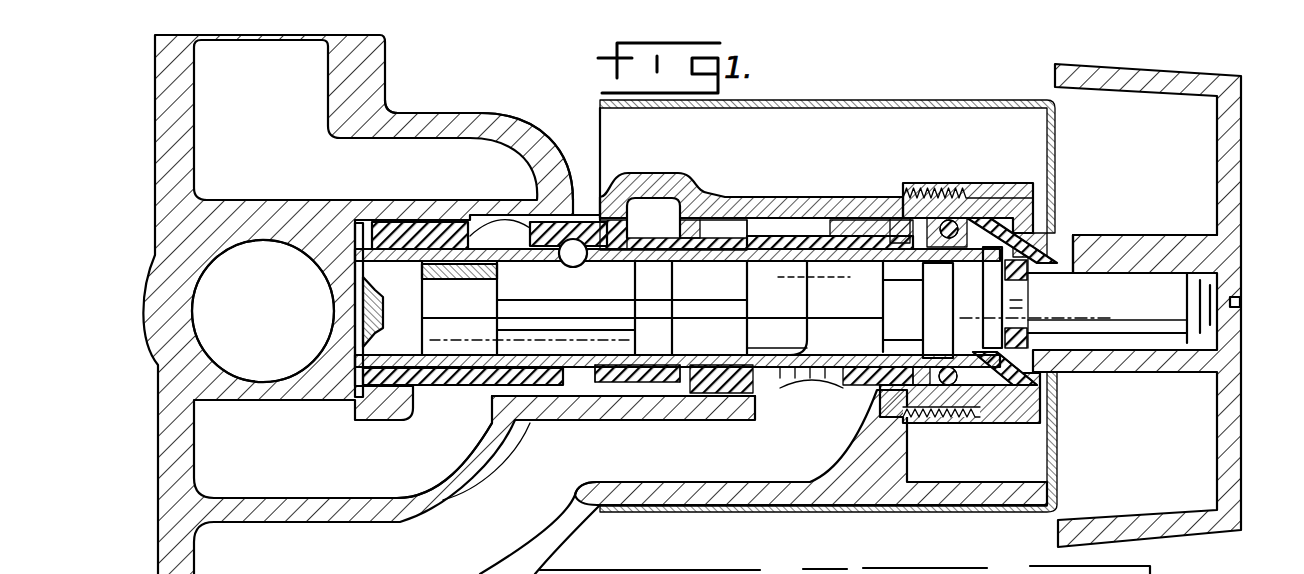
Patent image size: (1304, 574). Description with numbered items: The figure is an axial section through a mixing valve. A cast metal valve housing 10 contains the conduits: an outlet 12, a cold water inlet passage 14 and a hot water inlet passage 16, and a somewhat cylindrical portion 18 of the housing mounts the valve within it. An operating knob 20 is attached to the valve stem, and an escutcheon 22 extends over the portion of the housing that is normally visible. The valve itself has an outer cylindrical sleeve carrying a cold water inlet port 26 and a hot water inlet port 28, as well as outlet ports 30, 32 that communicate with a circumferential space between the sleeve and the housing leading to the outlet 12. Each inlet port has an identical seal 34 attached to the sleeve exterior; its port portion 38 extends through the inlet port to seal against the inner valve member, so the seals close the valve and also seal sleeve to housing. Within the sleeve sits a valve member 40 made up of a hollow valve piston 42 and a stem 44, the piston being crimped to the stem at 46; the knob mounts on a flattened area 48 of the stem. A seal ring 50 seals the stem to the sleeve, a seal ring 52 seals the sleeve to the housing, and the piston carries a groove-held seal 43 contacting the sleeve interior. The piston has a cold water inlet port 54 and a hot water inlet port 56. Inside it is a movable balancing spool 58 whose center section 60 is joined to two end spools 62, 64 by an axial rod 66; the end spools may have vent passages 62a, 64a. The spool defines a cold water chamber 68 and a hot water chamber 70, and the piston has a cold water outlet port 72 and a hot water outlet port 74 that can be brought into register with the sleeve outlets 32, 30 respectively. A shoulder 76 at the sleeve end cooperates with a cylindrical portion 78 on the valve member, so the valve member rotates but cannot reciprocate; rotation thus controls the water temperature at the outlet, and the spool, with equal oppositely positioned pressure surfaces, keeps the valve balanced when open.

The valve housing 10 is at (447, 104).
The outlet 12 is at (263, 311).
The cold water inlet passage 14 is at (395, 163).
The hot water inlet passage 16 is at (728, 482).
The cylindrical portion 18 is at (775, 196).
The operating knob 20 is at (1243, 433).
The escutcheon 22 is at (953, 100).
The cold water inlet port 26 is at (530, 228).
The hot water inlet port 28 is at (817, 378).
The outlet port 30 is at (730, 212).
The outlet port 32 is at (600, 378).
The seal 34 is at (413, 220).
The port portion 38 is at (470, 236).
The valve member 40 is at (853, 238).
The valve piston 42 is at (870, 240).
The seal 43 is at (653, 218).
The stem 44 is at (1097, 333).
The crimp attachment 46 is at (950, 260).
The flattened area 48 is at (1142, 272).
The seal ring 50 is at (1027, 268).
The seal ring 52 is at (933, 424).
The cold water inlet port 54 is at (487, 380).
The hot water inlet port 56 is at (793, 242).
The balancing spool 58 is at (637, 354).
The center section 60 is at (662, 281).
The end spool 62 is at (423, 303).
The vent passage 62a is at (497, 278).
The end spool 64 is at (873, 333).
The vent passage 64a is at (791, 308).
The axial rod 66 is at (590, 313).
The cold water chamber 68 is at (550, 348).
The hot water chamber 70 is at (693, 344).
The cold water outlet port 72 is at (588, 265).
The hot water outlet port 74 is at (747, 350).
The shoulder 76 is at (977, 424).
The cylindrical portion 78 is at (973, 253).